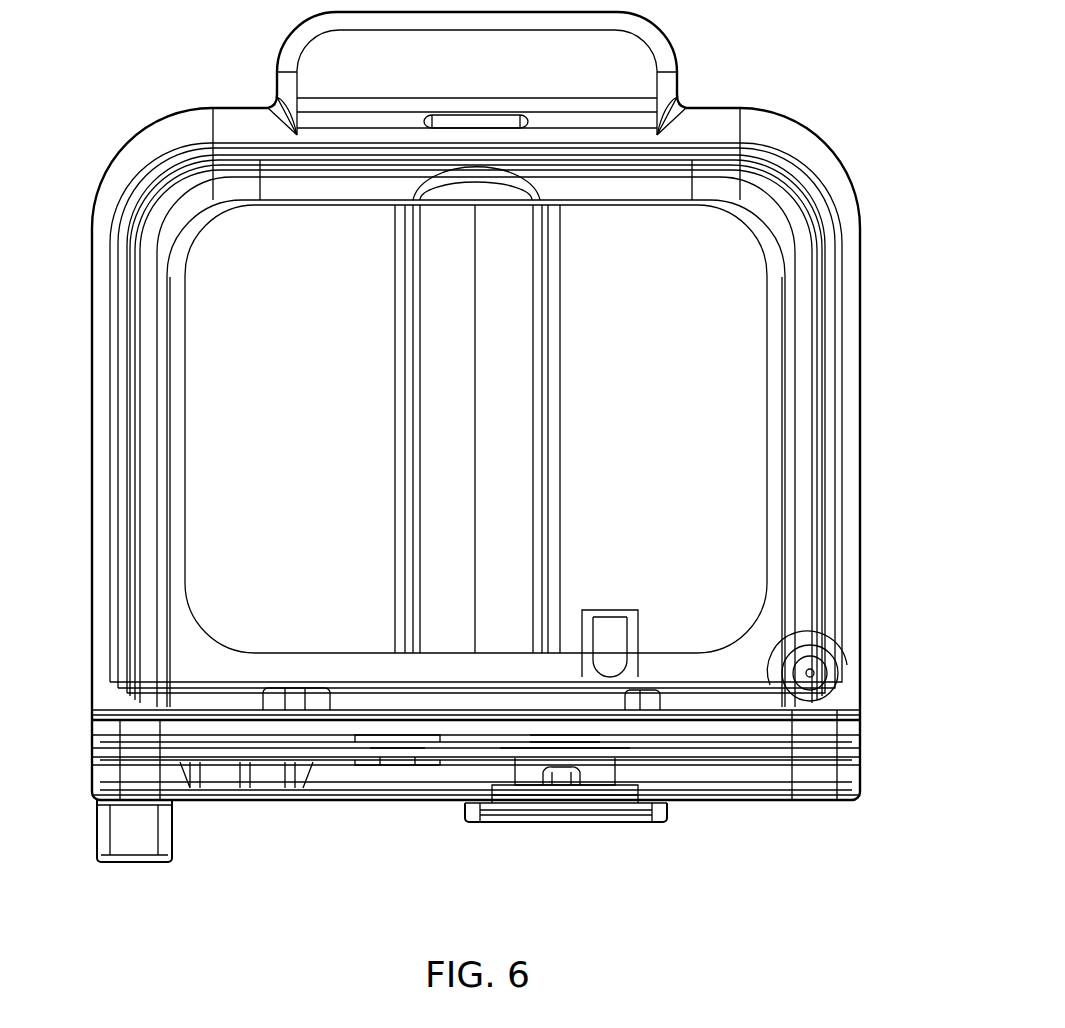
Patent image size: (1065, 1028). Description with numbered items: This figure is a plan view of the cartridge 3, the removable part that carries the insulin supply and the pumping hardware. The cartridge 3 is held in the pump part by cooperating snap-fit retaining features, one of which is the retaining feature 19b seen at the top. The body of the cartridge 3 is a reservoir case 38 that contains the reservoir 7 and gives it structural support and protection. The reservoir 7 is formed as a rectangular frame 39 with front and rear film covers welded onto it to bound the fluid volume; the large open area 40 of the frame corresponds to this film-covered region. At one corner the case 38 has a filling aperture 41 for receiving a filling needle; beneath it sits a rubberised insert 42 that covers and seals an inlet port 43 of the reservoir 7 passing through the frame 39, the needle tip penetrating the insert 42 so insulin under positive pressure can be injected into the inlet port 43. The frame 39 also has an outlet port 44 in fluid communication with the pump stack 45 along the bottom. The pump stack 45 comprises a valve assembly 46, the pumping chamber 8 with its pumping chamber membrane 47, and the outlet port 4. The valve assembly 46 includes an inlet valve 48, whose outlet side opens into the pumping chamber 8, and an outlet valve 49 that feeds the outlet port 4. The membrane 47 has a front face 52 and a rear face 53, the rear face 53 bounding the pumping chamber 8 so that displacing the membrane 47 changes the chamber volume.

The cartridge 3 is at (869, 133).
The retaining feature 19b is at (607, 60).
The reservoir case 38 is at (105, 613).
The rectangular frame 39 is at (145, 232).
The opening 40 is at (692, 375).
The reservoir 7 is at (738, 482).
The filling aperture 41 is at (812, 674).
The rubberised insert 42 is at (832, 624).
The inlet port 43 is at (757, 650).
The outlet port 44 is at (605, 660).
The pump stack 45 is at (882, 758).
The valve assembly 46 is at (397, 815).
The pumping chamber membrane 47 is at (560, 823).
The inlet valve 48 is at (557, 752).
The outlet valve 49 is at (400, 742).
The front face 52 is at (608, 825).
The rear face 53 is at (583, 790).
The pumping chamber 8 is at (558, 755).
The outlet port 4 is at (125, 848).